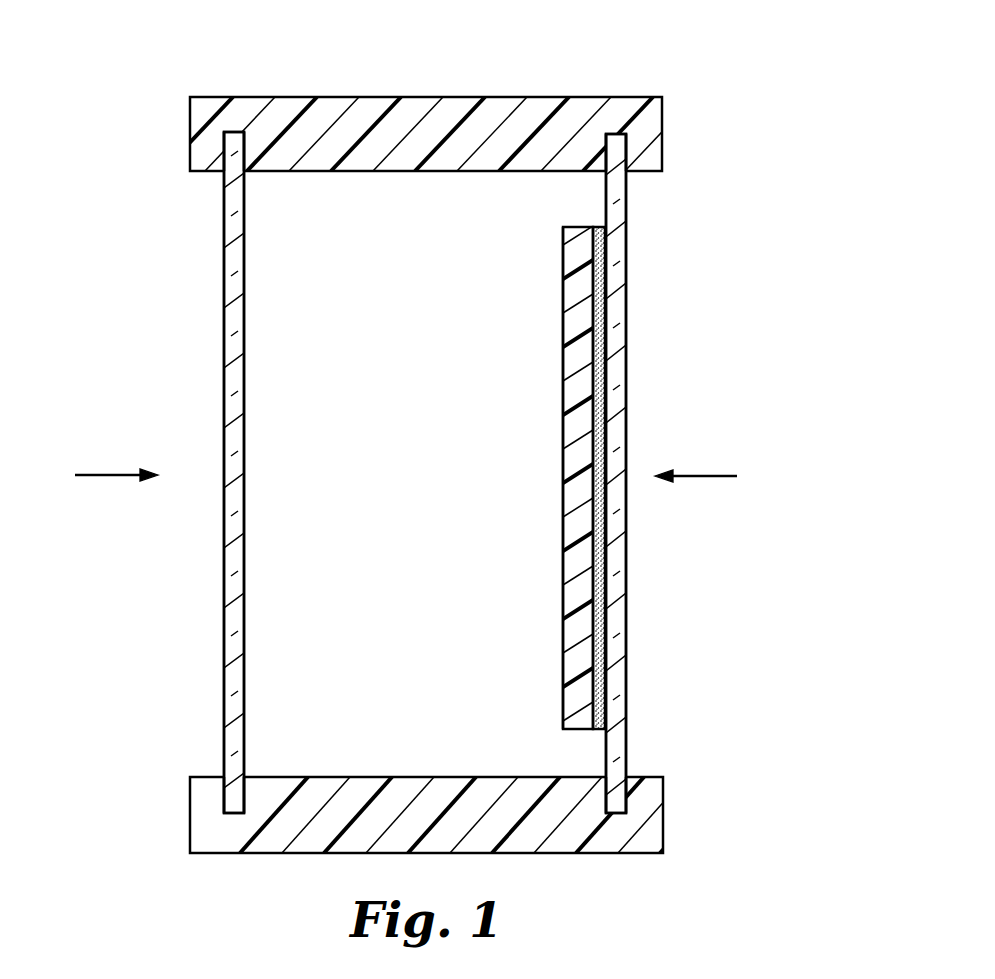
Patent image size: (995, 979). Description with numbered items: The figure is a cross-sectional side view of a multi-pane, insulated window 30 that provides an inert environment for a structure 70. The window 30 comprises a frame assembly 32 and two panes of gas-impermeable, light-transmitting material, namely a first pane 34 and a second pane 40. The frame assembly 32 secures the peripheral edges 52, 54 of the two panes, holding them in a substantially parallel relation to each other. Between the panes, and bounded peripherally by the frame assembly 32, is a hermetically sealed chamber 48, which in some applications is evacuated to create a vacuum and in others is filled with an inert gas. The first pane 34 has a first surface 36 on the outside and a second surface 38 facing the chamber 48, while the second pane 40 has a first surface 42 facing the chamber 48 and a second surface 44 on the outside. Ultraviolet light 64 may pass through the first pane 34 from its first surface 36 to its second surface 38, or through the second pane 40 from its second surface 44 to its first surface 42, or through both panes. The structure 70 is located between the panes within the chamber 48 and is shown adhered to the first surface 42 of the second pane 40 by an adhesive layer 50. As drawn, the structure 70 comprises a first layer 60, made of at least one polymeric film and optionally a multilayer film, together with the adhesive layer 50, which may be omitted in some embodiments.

The multi-pane insulated window 30 is at (675, 65).
The frame assembly 32 is at (427, 108).
The first pane 34 is at (233, 364).
The first surface of the first pane 36 is at (227, 419).
The second surface of the first pane 38 is at (245, 466).
The second pane 40 is at (618, 229).
The first surface of the second pane 42 is at (612, 210).
The second surface of the second pane 44 is at (627, 347).
The hermetically sealed chamber 48 is at (390, 316).
The adhesive layer 50 is at (599, 533).
The peripheral edge of the first pane 52 is at (235, 138).
The peripheral edge of the second pane 54 is at (613, 138).
The first layer 60 is at (572, 568).
The ultraviolet light 64 is at (95, 475).
The structure 70 is at (556, 661).